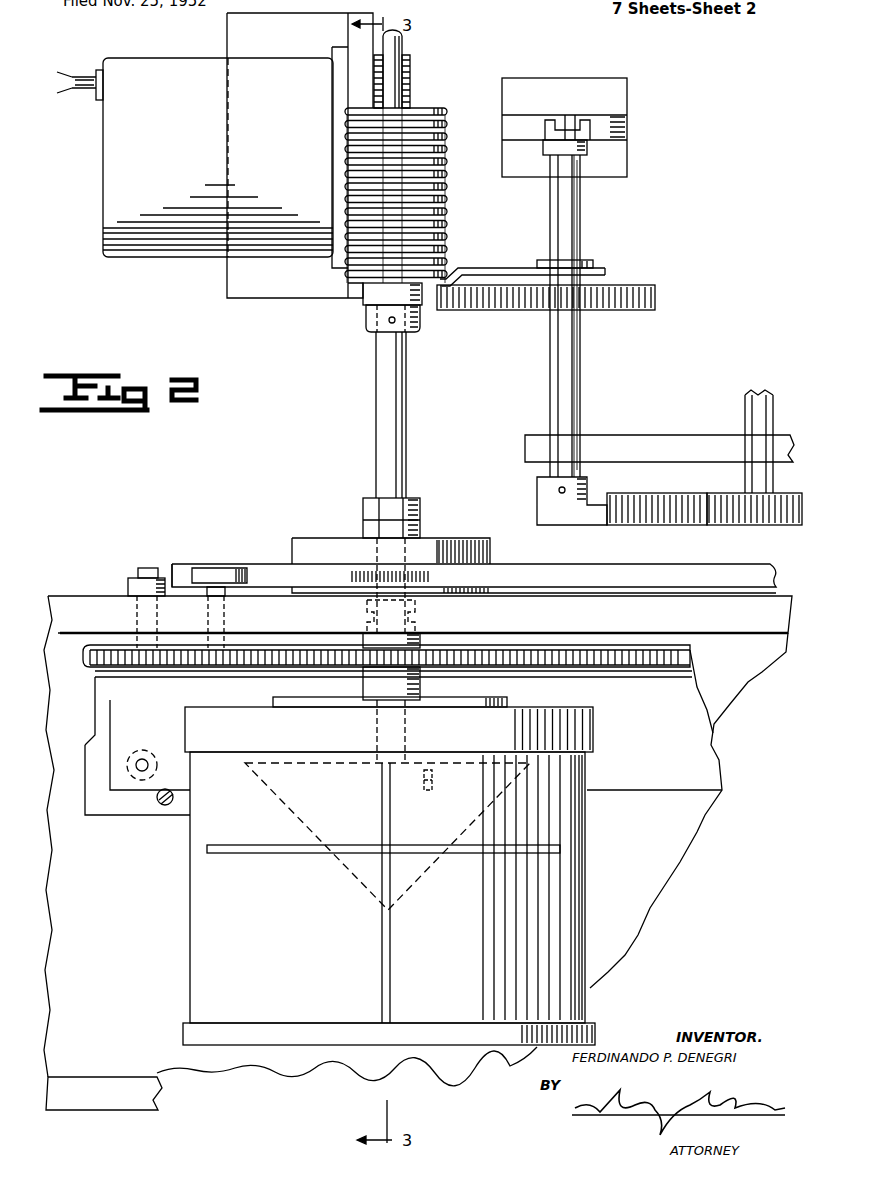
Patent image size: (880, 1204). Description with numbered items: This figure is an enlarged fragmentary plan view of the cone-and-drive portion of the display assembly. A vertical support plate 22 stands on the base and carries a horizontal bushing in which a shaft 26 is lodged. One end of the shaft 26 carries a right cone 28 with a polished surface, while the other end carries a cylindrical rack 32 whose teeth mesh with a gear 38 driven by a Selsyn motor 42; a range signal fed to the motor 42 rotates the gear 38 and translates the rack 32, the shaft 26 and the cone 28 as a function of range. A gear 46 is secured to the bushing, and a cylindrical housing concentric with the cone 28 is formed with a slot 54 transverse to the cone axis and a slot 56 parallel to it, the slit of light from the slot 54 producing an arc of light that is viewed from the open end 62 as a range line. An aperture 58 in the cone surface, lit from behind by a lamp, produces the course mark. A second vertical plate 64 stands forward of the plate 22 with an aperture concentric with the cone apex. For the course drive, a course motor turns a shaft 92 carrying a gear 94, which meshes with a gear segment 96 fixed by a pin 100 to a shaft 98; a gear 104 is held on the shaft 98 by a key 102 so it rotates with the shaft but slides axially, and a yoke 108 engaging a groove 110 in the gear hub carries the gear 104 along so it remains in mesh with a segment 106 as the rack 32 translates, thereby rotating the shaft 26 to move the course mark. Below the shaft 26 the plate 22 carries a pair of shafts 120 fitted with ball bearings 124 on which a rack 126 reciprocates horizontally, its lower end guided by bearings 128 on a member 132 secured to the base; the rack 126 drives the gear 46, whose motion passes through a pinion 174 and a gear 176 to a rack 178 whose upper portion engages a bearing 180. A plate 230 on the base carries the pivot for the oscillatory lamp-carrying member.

The vertical support plate 22 is at (72, 596).
The shaft 26 is at (404, 463).
The right cone 28 is at (360, 887).
The cylindrical rack 32 is at (447, 248).
The gear 38 is at (408, 92).
The Selsyn motor 42 is at (160, 72).
The gear 46 is at (497, 650).
The slot 54 is at (487, 857).
The slot 56 is at (391, 967).
The aperture 58 is at (434, 783).
The open end 62 is at (588, 902).
The second vertical plate 64 is at (93, 1087).
The shaft 92 is at (770, 418).
The gear 94 is at (772, 524).
The gear segment 96 is at (676, 524).
The shaft 98 is at (575, 413).
The pin 100 is at (559, 492).
The key 102 is at (566, 373).
The gear 104 is at (640, 285).
The segment 106 is at (443, 312).
The yoke 108 is at (488, 268).
The groove 110 is at (590, 262).
The shafts 120 is at (148, 568).
The ball bearings 124 is at (141, 664).
The rack 126 is at (590, 650).
The bearings 128 is at (150, 752).
The member 132 is at (123, 816).
The pinion 174 is at (421, 652).
The gear 176 is at (418, 563).
The rack 178 is at (268, 573).
The bearing 180 is at (217, 572).
The plate 230 is at (668, 446).